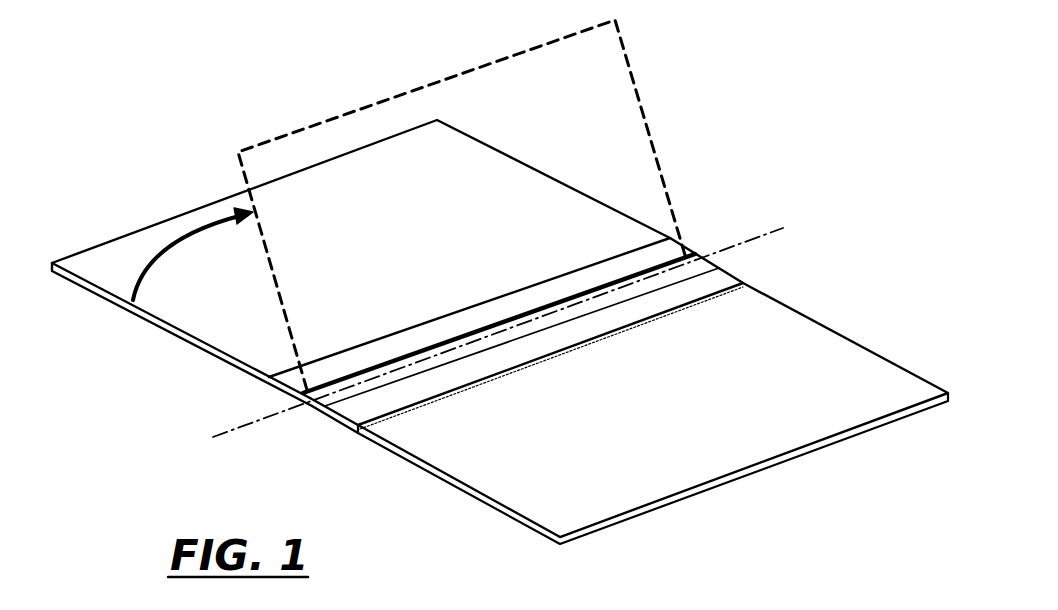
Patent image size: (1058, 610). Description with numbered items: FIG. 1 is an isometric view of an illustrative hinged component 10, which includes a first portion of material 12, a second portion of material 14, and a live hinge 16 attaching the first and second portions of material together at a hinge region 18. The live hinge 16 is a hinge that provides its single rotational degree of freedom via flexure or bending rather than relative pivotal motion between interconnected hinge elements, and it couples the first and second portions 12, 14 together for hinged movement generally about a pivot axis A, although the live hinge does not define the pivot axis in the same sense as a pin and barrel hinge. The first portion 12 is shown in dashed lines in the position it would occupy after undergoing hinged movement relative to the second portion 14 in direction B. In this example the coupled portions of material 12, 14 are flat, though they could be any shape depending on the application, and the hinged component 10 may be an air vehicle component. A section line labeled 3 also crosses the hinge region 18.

The hinged component 10 is at (500, 282).
The first portion of material 12 is at (180, 338).
The second portion of material 14 is at (820, 322).
The live hinge 16 is at (523, 284).
The hinge region 18 is at (590, 285).
The pivot axis A is at (762, 234).
The direction B is at (174, 246).
The section line 3- 3 is at (516, 349).